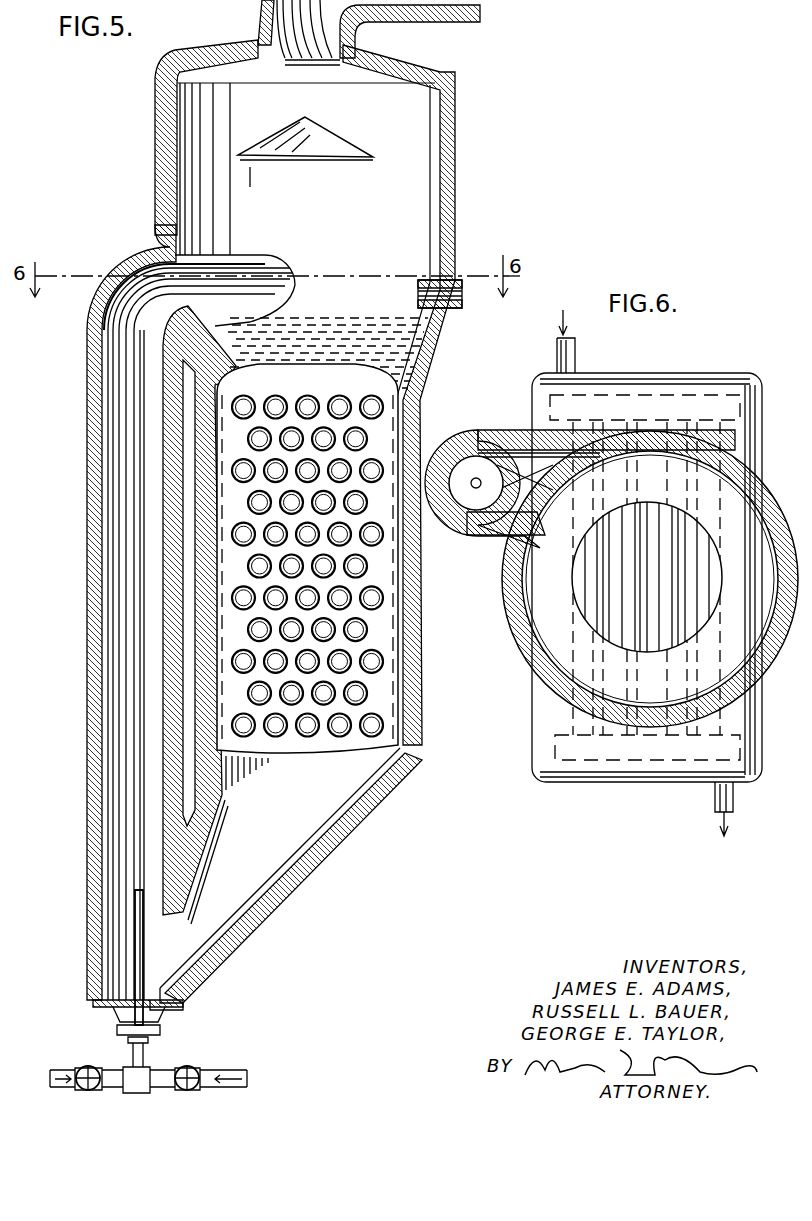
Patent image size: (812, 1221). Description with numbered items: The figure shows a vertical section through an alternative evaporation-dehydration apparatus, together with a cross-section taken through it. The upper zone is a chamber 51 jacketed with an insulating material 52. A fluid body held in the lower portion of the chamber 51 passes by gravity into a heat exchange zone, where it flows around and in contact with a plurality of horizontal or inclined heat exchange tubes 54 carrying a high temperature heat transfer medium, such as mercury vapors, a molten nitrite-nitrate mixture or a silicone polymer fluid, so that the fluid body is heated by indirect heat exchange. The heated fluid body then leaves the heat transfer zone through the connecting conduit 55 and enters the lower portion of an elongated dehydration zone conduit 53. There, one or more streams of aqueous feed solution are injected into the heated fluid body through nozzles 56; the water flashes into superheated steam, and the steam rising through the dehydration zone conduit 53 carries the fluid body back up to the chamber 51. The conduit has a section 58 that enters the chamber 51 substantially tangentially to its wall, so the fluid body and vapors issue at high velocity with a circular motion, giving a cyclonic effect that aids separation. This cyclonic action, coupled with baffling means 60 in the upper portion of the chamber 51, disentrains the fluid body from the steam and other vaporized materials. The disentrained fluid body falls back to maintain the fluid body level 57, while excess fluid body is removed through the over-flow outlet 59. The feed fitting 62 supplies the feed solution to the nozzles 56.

In FIG. 5, the chamber 51 is at (306, 411).
In FIG. 6, the chamber 51 is at (540, 612).
In FIG. 5, the insulating material 52 is at (420, 98).
In FIG. 5, the elongated dehydration zone conduit 53 is at (100, 412).
In FIG. 6, the elongated dehydration zone conduit 53 is at (480, 462).
In FIG. 5, the heat exchange tubes 54 is at (385, 433).
In FIG. 5, the connecting conduit 55 is at (282, 847).
In FIG. 5, the nozzles 56 is at (135, 893).
In FIG. 6, the nozzles 56 is at (474, 488).
In FIG. 5, the fluid body level 57 is at (350, 305).
In FIG. 5, the section 58 is at (218, 266).
In FIG. 6, the section 58 is at (560, 450).
In FIG. 5, the over-flow outlet 59 is at (463, 285).
In FIG. 5, the baffling means 60 is at (325, 140).
In FIG. 5, the feed fitting 62 is at (147, 1050).